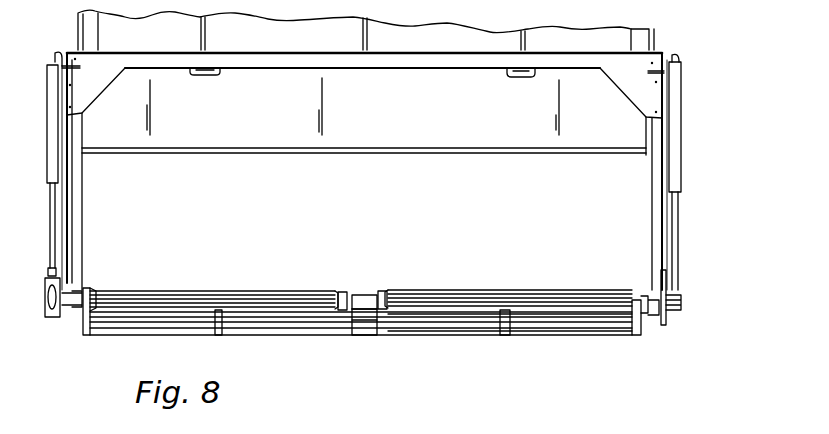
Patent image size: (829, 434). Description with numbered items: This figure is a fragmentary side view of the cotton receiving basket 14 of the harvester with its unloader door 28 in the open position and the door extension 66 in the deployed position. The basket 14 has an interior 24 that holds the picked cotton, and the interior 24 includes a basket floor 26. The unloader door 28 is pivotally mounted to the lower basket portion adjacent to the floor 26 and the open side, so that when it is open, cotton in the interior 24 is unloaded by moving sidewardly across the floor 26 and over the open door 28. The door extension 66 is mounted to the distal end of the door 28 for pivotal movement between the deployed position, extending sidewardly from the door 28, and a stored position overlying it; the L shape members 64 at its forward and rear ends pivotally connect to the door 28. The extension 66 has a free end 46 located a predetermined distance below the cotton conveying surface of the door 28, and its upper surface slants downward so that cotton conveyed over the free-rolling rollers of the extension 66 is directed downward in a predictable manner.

The cotton receiving basket 14 is at (660, 33).
The interior 24 is at (372, 198).
The basket floor 26 is at (387, 297).
The unloader door 28 is at (545, 292).
The free end 46 is at (318, 337).
The L shape member 64 is at (88, 337).
The door extension 66 is at (468, 337).